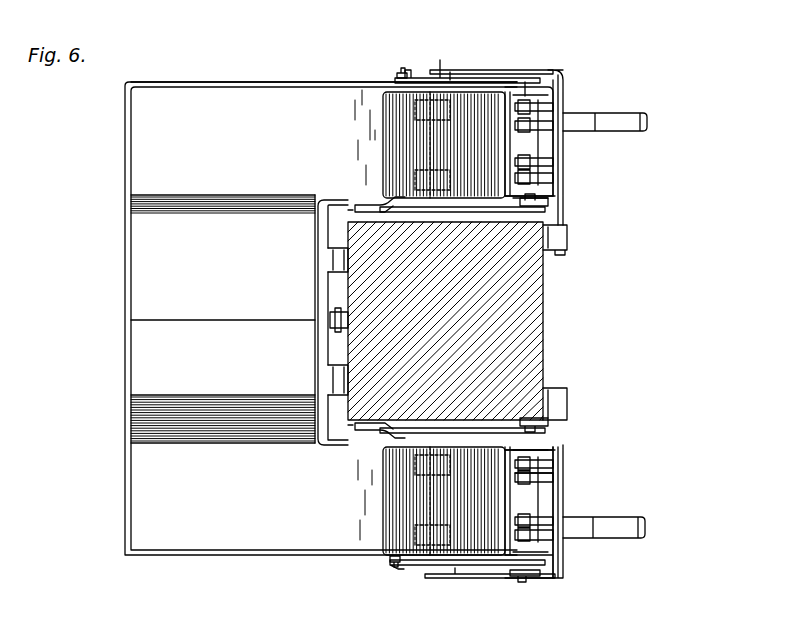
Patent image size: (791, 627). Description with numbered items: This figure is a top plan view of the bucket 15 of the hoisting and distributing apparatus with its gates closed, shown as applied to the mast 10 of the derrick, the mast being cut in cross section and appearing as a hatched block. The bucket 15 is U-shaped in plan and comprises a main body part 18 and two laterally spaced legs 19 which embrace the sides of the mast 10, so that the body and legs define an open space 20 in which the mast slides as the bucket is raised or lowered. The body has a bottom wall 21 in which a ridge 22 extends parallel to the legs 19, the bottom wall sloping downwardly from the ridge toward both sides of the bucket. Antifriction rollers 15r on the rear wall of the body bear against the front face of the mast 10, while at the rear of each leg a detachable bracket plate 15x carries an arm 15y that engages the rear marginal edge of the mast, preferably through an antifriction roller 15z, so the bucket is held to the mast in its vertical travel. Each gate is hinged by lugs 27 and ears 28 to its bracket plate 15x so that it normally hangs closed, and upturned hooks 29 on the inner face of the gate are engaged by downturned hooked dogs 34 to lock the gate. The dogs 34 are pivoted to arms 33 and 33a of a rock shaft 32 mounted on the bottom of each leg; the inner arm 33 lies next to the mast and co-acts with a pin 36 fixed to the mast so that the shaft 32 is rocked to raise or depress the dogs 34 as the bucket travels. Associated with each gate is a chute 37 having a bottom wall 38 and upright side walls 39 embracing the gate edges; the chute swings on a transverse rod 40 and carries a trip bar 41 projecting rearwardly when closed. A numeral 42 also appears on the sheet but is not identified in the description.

The mast 10 is at (543, 302).
The bucket 15 is at (116, 107).
The antifriction rollers 15r is at (340, 378).
The bracket plate 15x is at (534, 96).
The arms 15y is at (560, 190).
The antifriction rollers 15z is at (566, 240).
The main body part 18 is at (131, 167).
The legs 19 is at (498, 554).
The open space 20 is at (329, 448).
The bottom wall 21 is at (223, 169).
The ridge 22 is at (223, 320).
The lugs 27 is at (548, 472).
The ears 28 is at (548, 126).
The upturned dogs or hooks 29 is at (537, 76).
The rock shaft 32 is at (412, 140).
The rock arm 33 is at (368, 205).
The rock arm 33a is at (392, 556).
The hooked dogs 34 is at (458, 80).
The pin 36 is at (358, 215).
The chute 37 is at (569, 74).
The bottom wall 38 is at (565, 145).
The side walls 39 is at (434, 70).
The rod 40 is at (521, 580).
The trip bar 41 is at (647, 116).
The rod 42 is at (750, 615).